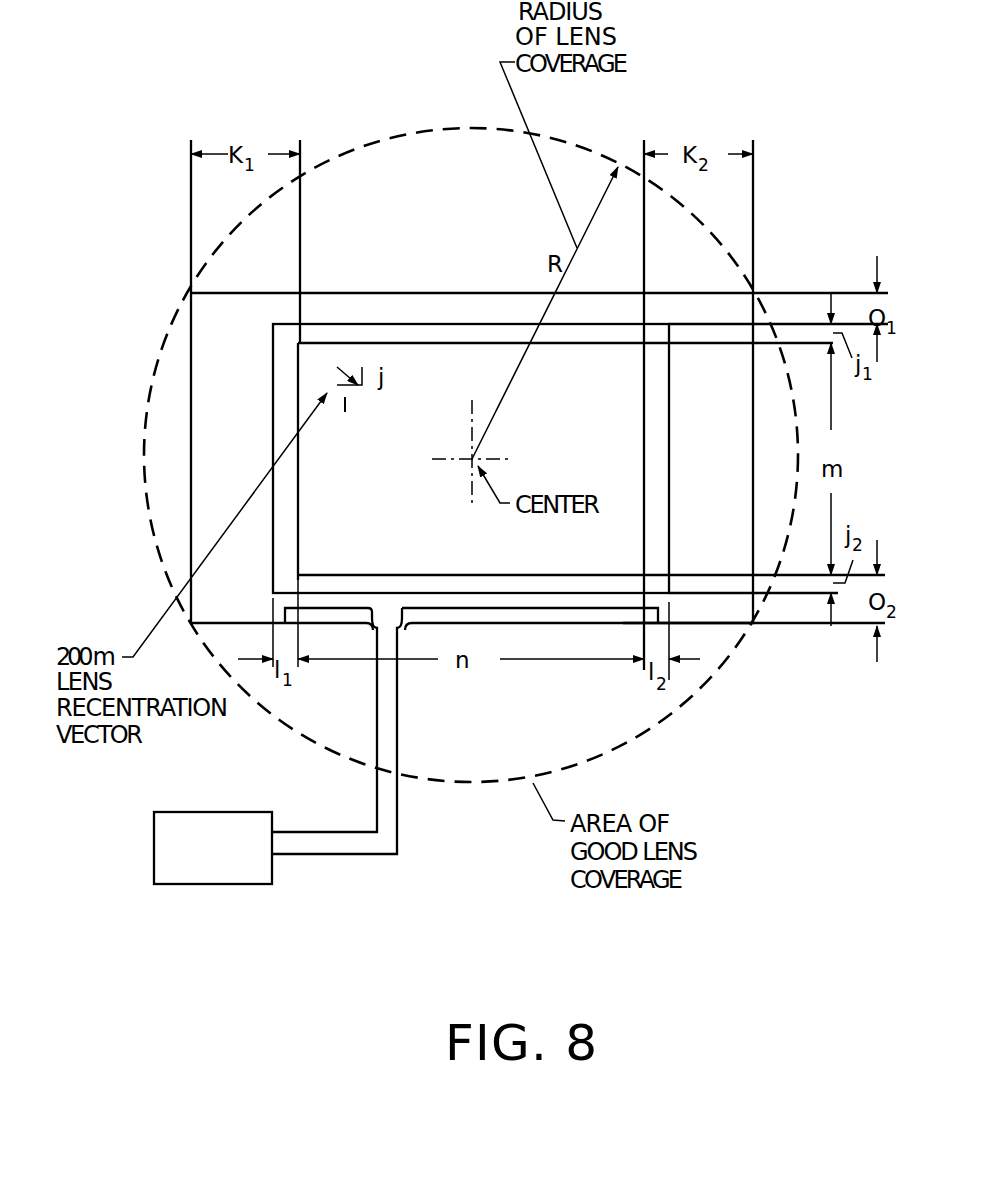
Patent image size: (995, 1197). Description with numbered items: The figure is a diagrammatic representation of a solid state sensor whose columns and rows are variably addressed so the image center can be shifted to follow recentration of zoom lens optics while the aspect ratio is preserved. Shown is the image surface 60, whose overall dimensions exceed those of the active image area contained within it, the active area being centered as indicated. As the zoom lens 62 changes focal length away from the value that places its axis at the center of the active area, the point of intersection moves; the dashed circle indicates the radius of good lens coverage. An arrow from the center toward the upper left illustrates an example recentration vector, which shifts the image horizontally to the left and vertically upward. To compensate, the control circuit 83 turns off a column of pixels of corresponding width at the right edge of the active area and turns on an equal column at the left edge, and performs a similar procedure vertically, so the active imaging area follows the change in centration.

The image surface 60 is at (410, 290).
The zoom lens 62 is at (402, 133).
The control circuit 83 is at (188, 886).